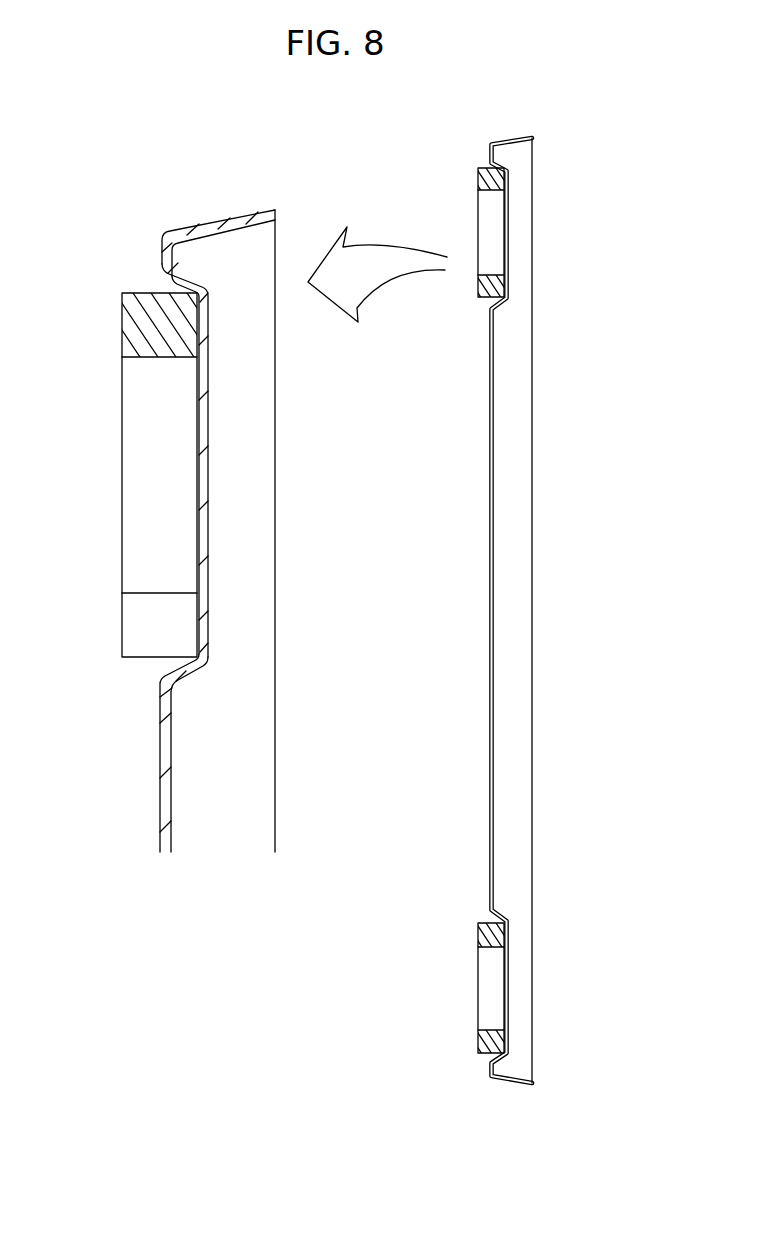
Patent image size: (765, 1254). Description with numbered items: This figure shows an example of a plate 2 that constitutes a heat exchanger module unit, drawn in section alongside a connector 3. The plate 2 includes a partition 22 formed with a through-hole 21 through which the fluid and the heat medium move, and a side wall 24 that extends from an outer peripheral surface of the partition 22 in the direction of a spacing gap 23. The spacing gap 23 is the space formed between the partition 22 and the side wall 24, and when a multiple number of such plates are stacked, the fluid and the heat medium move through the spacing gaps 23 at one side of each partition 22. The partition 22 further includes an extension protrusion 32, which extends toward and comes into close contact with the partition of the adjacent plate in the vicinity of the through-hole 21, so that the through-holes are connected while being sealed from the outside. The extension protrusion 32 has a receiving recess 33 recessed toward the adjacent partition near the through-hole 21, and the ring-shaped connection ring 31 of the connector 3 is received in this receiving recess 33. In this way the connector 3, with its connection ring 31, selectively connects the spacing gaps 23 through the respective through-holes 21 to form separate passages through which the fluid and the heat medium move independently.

The plate 2 is at (167, 479).
The connector 3 is at (512, 170).
The through-hole 21 is at (200, 367).
The partition 22 is at (160, 790).
The spacing gap 23 is at (205, 743).
The side wall 24 is at (228, 217).
The connection ring 31 is at (205, 475).
The extension protrusion 32 is at (203, 308).
The receiving recess 33 is at (195, 627).